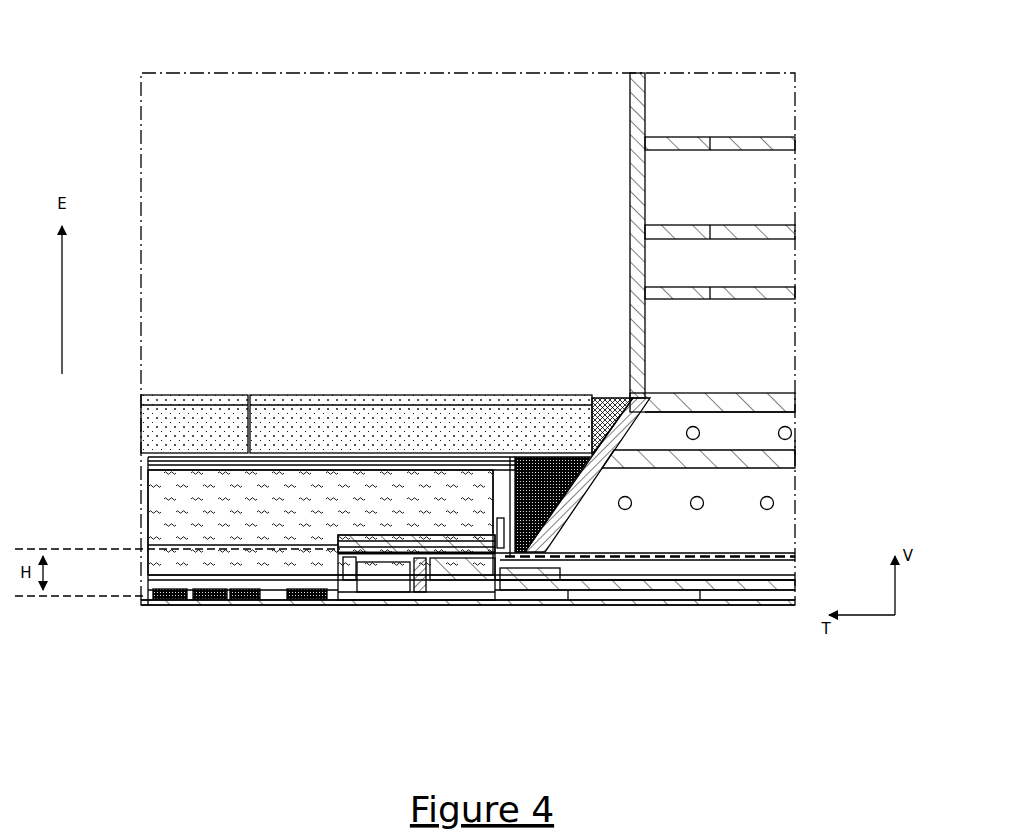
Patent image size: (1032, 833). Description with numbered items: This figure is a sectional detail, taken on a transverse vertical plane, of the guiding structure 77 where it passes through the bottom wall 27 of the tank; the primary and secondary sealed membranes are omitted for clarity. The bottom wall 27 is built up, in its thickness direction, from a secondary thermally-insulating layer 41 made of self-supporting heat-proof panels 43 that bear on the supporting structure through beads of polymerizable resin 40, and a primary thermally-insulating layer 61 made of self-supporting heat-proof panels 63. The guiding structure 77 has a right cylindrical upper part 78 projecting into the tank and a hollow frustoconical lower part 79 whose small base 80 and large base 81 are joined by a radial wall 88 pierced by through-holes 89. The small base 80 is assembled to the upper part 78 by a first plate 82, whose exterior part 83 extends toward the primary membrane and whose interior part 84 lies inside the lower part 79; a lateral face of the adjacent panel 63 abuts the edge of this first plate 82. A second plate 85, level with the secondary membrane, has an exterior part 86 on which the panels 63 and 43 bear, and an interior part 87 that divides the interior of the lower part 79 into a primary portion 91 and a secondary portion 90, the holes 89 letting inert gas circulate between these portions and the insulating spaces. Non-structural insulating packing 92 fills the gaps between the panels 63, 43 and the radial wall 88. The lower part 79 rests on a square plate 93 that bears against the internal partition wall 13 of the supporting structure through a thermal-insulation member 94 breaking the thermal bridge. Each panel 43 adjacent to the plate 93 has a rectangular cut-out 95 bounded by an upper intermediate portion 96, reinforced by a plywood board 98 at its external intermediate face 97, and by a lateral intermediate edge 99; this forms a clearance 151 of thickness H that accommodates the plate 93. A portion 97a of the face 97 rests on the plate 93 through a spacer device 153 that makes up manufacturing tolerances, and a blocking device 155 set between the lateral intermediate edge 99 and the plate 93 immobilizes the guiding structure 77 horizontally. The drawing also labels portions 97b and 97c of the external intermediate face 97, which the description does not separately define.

The internal partition wall 13 is at (205, 600).
The bottom wall 27 is at (204, 301).
The beads of polymerizable resin 40 is at (165, 600).
The secondary thermally-insulating layer 41 is at (116, 492).
The self-supporting heat-proof panels 43 is at (162, 499).
The primary thermally-insulating layer 61 is at (121, 407).
The self-supporting heat-proof panels 63 is at (165, 423).
The guiding structure 77 is at (543, 176).
The upper part 78 is at (628, 161).
The lower part 79 is at (800, 448).
The small base 80 is at (760, 421).
The large base 81 is at (754, 547).
The first plate 82 is at (759, 399).
The exterior part of the first plate 83 is at (598, 396).
The interior part of the first plate 84 is at (697, 402).
The second plate 85 is at (772, 463).
The exterior part of the second plate 86 is at (532, 495).
The interior part of the second plate 87 is at (653, 463).
The radial wall 88 is at (572, 493).
The through-holes 89 is at (793, 432).
The secondary portion 90 is at (755, 488).
The primary portion 91 is at (720, 430).
The non-structural insulating packing 92 is at (613, 396).
The plate 93 is at (513, 575).
The thermal-insulation member 94 is at (543, 593).
The cut-out 95 is at (363, 590).
The upper intermediate portion 96 is at (377, 538).
The external intermediate face 97 is at (350, 538).
The portion of the external intermediate face 97a is at (497, 530).
The bracket upper flange 97b is at (360, 540).
The bracket lower flange 97c is at (454, 538).
The plywood board 98 is at (140, 549).
The lateral intermediate edge 99 is at (345, 557).
The clearance 151 is at (473, 597).
The spacer device 153 is at (445, 560).
The blocking device 155 is at (393, 584).